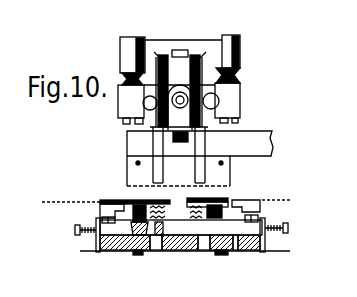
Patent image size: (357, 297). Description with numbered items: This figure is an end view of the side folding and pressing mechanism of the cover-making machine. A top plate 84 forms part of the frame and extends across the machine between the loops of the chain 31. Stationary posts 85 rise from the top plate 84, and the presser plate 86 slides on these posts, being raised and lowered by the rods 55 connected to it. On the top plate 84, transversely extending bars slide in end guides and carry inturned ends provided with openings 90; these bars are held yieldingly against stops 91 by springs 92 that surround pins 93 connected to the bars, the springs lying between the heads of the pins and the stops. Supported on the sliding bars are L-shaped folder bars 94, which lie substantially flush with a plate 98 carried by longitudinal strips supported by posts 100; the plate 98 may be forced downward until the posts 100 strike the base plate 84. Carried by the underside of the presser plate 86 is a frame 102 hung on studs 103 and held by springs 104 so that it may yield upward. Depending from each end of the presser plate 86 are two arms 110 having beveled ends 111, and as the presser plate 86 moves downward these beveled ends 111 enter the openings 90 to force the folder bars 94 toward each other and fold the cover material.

The chain 31 is at (72, 200).
The rods 55 is at (180, 113).
The top plate 84 is at (118, 251).
The stationary posts 85 is at (178, 50).
The presser plate 86 is at (208, 39).
The openings 90 is at (172, 251).
The stops 91 is at (97, 253).
The springs 92 is at (100, 221).
The pins 93 is at (75, 229).
The L-shaped folder bars 94 is at (250, 202).
The plate 98 is at (133, 202).
The posts 100 is at (228, 251).
The frame 102 is at (242, 100).
The studs 103 is at (121, 39).
The springs 104 is at (118, 87).
The arms 110 is at (205, 150).
The beveled ends 111 is at (210, 173).